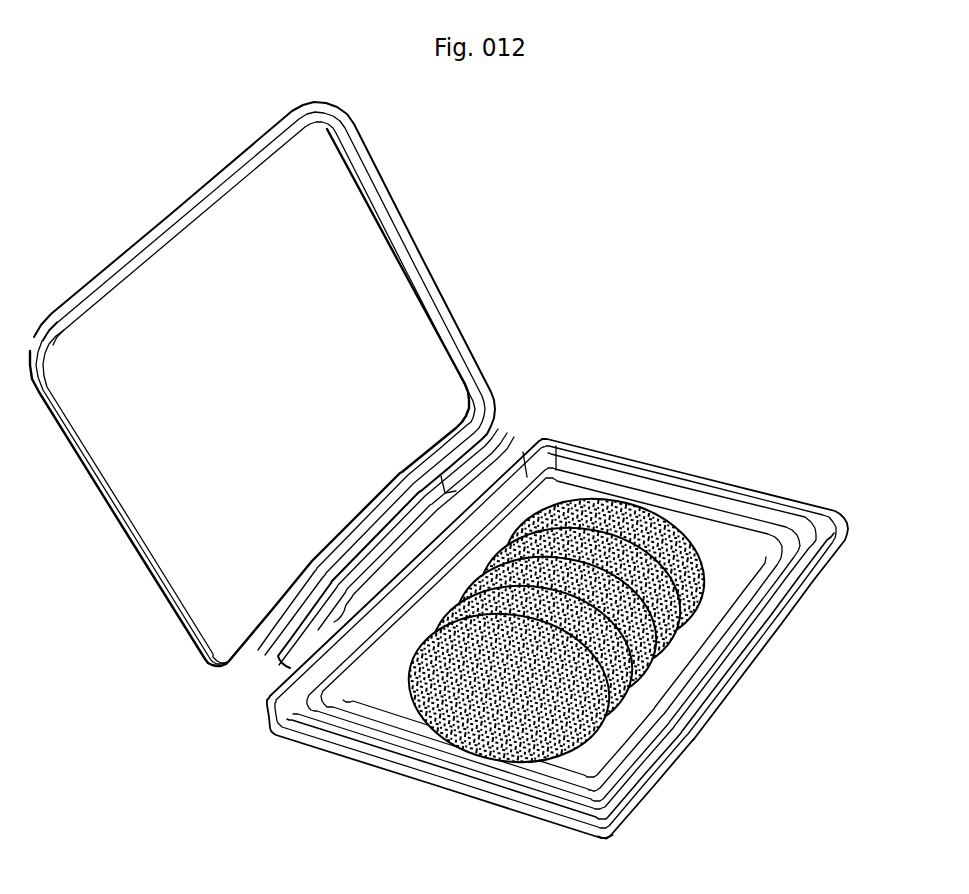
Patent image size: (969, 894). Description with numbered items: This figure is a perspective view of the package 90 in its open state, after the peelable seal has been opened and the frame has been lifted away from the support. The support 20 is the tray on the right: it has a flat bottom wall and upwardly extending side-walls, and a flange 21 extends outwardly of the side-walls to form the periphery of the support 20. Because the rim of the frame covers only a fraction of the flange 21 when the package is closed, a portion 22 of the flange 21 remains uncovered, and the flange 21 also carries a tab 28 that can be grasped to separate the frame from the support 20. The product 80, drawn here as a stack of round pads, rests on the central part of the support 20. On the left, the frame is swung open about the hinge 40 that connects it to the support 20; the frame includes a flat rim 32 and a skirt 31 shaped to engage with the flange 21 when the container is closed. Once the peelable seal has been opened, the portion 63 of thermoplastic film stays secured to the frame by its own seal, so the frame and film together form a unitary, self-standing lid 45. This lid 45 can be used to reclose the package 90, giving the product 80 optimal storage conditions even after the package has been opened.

The support 20 is at (800, 617).
The flange 21 is at (353, 760).
The portion of flange left uncovered 22 is at (637, 750).
The tab 28 is at (603, 828).
The skirt 31 is at (227, 162).
The rim 32 is at (120, 273).
The hinge 40 is at (467, 458).
The lid 45 is at (380, 197).
The portion of thermoplastic film 63 is at (375, 367).
The product 80 is at (577, 497).
The package 90 is at (531, 194).